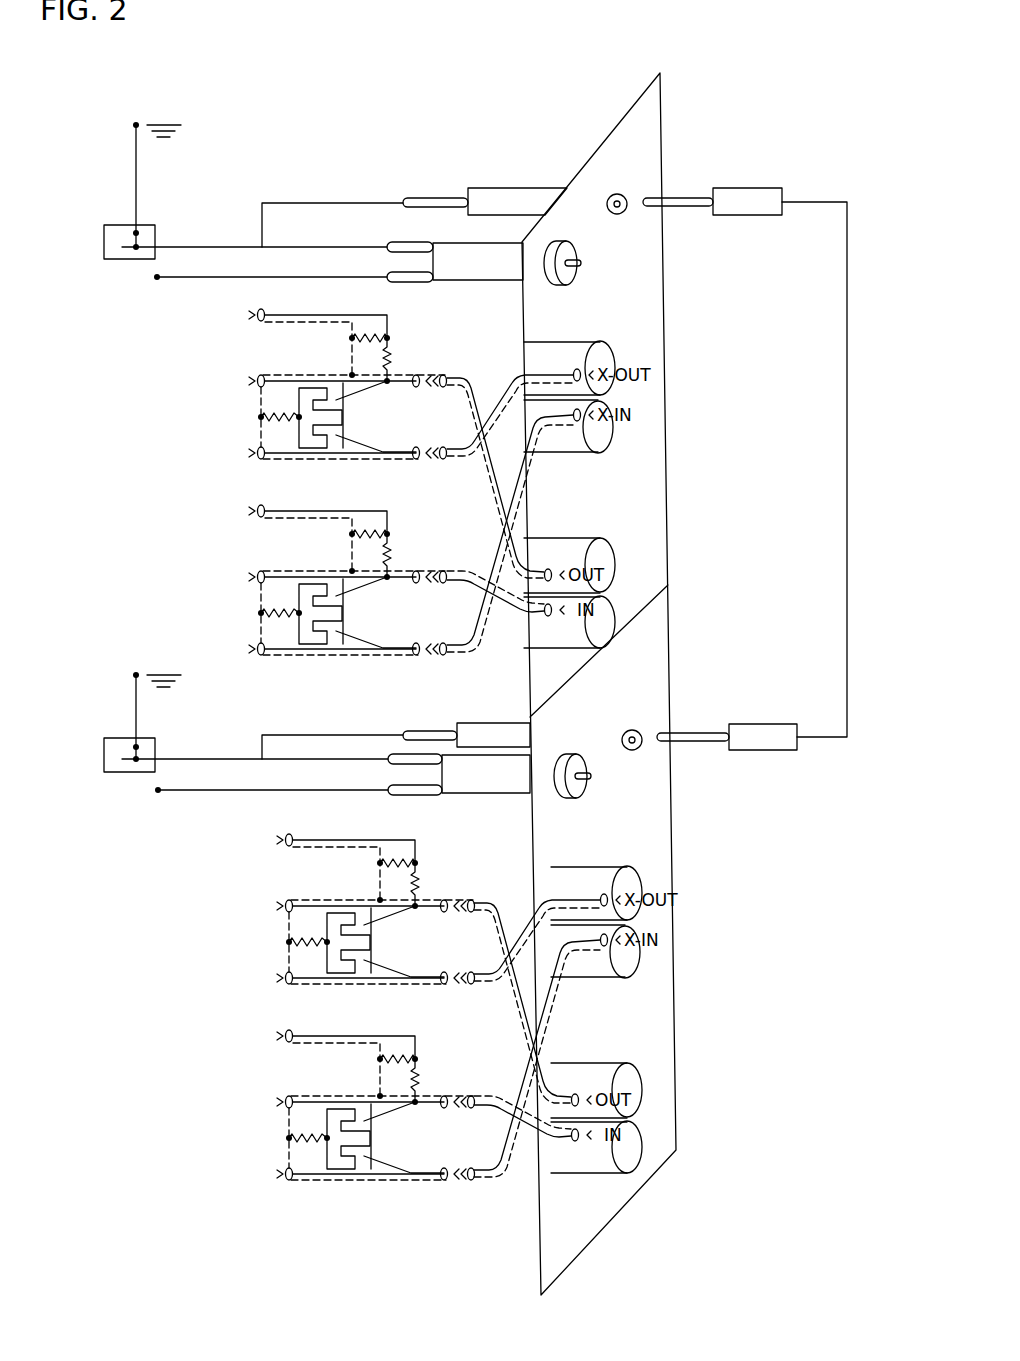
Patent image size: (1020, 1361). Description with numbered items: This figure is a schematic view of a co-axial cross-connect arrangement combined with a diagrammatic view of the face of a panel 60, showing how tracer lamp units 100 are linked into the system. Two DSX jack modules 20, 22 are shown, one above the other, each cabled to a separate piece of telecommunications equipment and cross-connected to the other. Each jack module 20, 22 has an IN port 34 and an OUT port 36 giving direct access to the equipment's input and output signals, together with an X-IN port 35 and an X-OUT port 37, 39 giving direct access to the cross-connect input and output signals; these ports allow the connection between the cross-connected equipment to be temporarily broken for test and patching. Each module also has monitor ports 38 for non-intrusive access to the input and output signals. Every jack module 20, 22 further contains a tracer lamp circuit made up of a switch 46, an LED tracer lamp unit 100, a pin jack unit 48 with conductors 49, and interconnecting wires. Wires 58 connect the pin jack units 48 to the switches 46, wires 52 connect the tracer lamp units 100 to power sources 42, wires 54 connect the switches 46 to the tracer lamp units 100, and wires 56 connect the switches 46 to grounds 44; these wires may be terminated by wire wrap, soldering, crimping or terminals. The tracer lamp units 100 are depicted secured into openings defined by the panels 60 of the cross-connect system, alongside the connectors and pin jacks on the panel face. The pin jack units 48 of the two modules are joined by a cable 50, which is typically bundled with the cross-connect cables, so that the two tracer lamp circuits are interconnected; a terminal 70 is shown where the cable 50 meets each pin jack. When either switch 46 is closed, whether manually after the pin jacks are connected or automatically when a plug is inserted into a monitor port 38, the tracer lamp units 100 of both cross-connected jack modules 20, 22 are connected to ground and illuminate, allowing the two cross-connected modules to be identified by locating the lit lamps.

The jack module 20 is at (178, 1001).
The jack module 22 is at (150, 477).
The IN port 34 is at (213, 575).
The X-IN port 35 is at (195, 642).
The OUT port 36 is at (208, 378).
The X-OUT port 37 is at (216, 972).
The monitor port 38 is at (210, 307).
The X-OUT connector 39 is at (188, 447).
The power source 42 is at (157, 278).
The ground 44 is at (136, 125).
The switch 46 is at (104, 245).
The pin jack unit 48 is at (493, 188).
The conductor 49 is at (423, 197).
The cable 50 is at (847, 497).
The wire 52 is at (313, 277).
The wire 54 is at (212, 247).
The wire 56 is at (136, 205).
The wire 58 is at (327, 200).
The panel 60 is at (647, 128).
The terminal 70 is at (753, 208).
The tracer lamp unit 100 is at (462, 278).